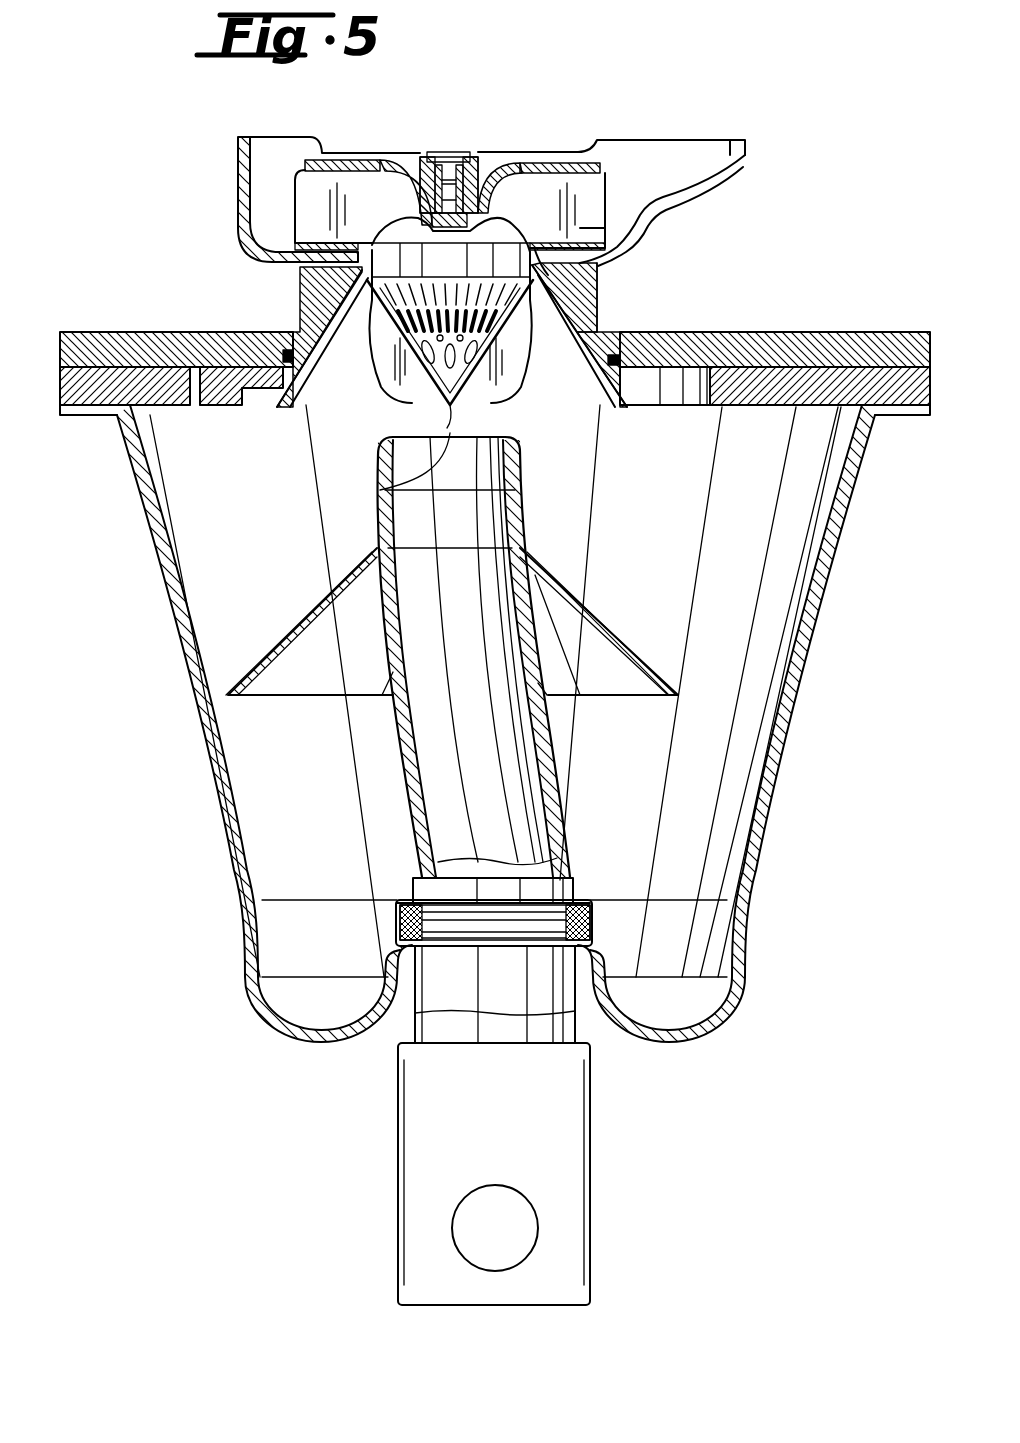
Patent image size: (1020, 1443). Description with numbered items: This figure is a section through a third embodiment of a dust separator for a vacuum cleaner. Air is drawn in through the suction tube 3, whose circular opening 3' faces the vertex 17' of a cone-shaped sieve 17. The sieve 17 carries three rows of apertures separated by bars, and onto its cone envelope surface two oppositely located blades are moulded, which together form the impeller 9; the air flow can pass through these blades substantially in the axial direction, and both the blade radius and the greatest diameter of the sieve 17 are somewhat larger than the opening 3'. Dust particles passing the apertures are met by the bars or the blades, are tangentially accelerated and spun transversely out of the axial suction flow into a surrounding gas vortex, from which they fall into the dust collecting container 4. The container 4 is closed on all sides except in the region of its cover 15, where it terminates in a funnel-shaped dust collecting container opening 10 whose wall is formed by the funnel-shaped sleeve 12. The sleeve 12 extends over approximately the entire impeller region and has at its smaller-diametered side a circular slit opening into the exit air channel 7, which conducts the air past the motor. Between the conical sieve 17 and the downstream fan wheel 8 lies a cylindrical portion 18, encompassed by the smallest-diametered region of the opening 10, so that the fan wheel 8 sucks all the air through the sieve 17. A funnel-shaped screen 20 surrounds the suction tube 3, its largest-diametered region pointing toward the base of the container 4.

The suction tube 3 is at (643, 871).
The opening of the suction tube 3' is at (304, 647).
The dust collecting container 4 is at (690, 783).
The exit air channel 7 is at (660, 165).
The fan wheel 8 is at (547, 203).
The impeller 9 is at (500, 362).
The dust collecting container opening 10 is at (560, 390).
The funnel-shaped sleeve 12 is at (598, 333).
The cover 15 is at (790, 387).
The cone-shaped sieve 17 is at (502, 328).
The vertex of the sieve 17' is at (420, 691).
The cylindrical portion 18 is at (640, 248).
The funnel-shaped screen 20 is at (303, 670).